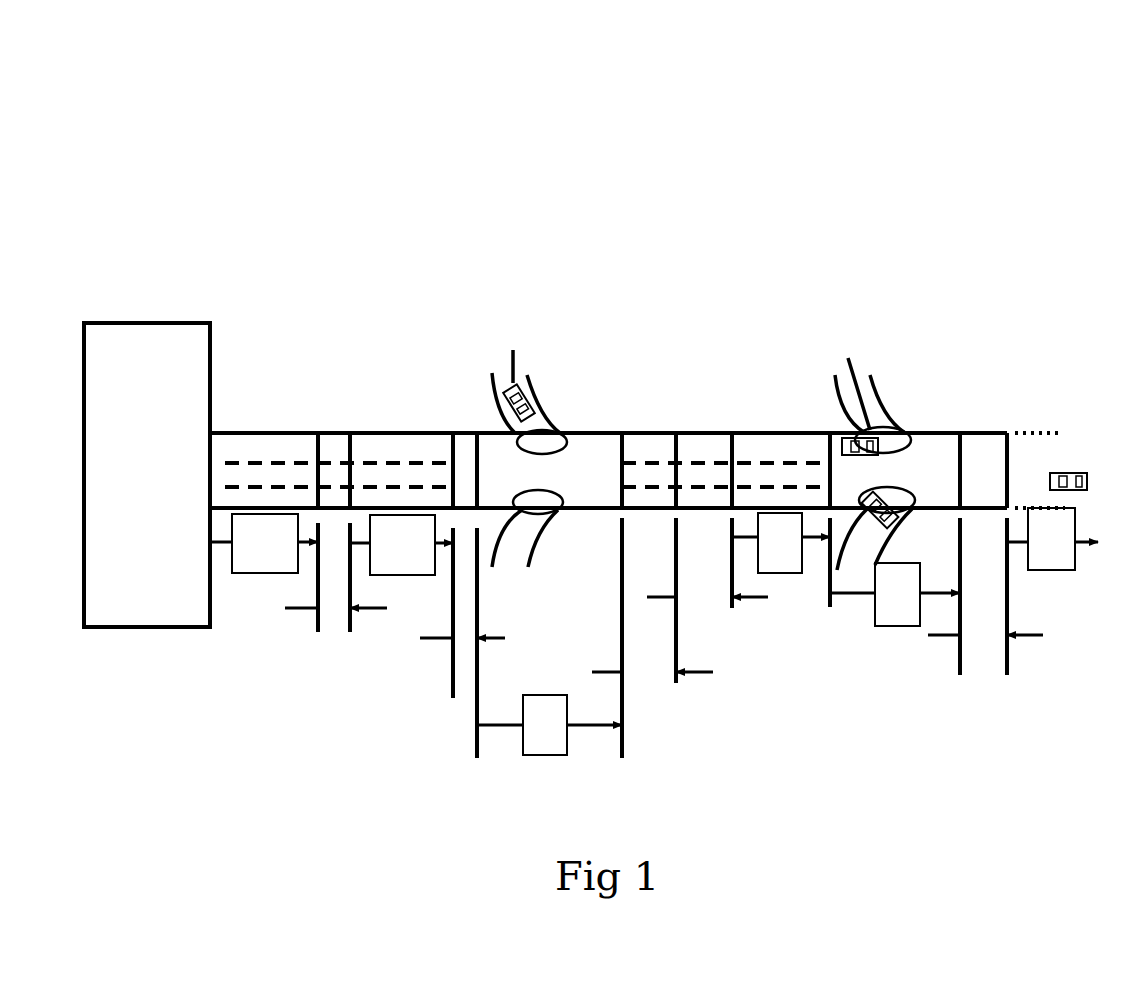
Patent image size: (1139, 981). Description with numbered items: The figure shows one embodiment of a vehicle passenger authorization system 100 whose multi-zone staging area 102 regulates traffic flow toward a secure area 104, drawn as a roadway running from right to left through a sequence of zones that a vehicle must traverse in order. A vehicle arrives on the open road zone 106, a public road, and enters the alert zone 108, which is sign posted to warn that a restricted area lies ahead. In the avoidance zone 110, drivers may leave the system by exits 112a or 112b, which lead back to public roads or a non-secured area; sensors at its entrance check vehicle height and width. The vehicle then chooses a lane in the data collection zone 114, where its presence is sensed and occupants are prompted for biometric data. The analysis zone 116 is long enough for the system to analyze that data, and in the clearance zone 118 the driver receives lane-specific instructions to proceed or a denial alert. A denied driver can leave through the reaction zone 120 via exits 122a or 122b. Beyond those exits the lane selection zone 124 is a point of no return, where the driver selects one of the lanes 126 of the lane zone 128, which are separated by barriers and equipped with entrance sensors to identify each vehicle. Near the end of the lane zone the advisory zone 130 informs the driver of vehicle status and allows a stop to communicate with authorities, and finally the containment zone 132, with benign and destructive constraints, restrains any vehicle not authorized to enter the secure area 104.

The vehicle passenger authorization system 100 is at (612, 61).
The multi-zone staging area 102 is at (1080, 473).
The secure area 104 is at (140, 627).
The open road zone 106 is at (1053, 557).
The alert zone 108 is at (982, 647).
The avoidance zone 110 is at (900, 607).
The exit 112a is at (885, 412).
The exit 112b is at (888, 536).
The data collection zone 114 is at (782, 557).
The analysis zone 116 is at (703, 518).
The clearance zone 118 is at (647, 514).
The reaction zone 120 is at (545, 740).
The exit 122a is at (533, 397).
The exit 122b is at (537, 540).
The lane selection zone 124 is at (465, 447).
The lanes 126 is at (713, 447).
The lane zone 128 is at (395, 565).
The advisory zone 130 is at (335, 515).
The containment zone 132 is at (260, 565).